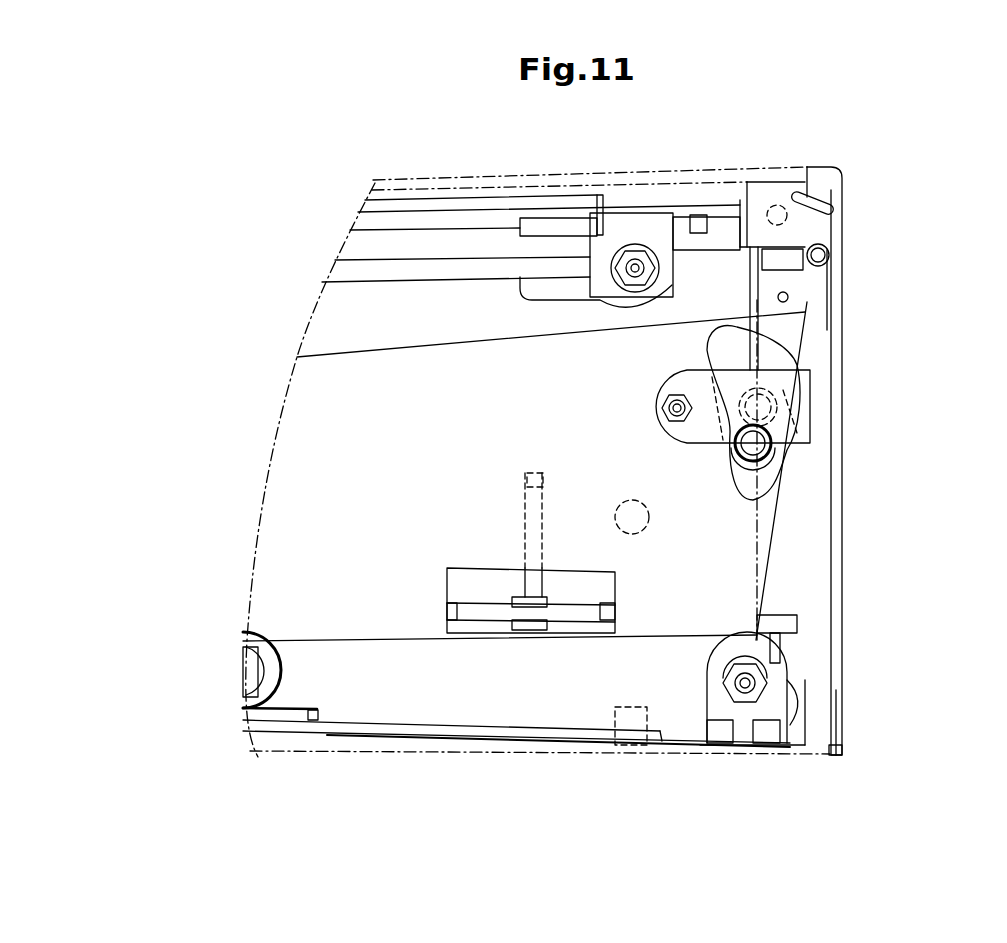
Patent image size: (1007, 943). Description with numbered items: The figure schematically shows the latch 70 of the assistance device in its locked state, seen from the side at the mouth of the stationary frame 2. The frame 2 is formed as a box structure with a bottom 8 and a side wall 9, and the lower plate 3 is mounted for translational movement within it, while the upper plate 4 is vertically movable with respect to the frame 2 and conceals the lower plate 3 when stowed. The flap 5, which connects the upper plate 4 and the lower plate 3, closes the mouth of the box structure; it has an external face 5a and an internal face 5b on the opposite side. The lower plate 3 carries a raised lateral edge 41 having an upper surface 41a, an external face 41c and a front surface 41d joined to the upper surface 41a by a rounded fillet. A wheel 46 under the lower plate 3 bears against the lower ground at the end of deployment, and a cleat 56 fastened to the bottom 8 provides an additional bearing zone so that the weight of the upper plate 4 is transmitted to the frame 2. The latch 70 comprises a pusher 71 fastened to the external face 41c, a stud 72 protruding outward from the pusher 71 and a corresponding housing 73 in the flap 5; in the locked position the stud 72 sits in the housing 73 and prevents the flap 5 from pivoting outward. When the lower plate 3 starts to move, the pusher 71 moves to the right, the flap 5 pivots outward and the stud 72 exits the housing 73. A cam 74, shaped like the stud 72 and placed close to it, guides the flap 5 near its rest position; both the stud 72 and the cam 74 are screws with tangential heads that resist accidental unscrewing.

The frame 2 is at (470, 748).
The lower plate 3 is at (332, 419).
The upper plate 4 is at (352, 249).
The flap 5 is at (856, 492).
The external face 5a is at (840, 717).
The internal face 5b is at (830, 700).
The bottom 8 is at (528, 740).
The side wall 9 is at (387, 751).
The raised lateral edge 41 is at (311, 560).
The upper surface 41a is at (357, 347).
The external face 41c is at (441, 493).
The front surface 41d is at (780, 530).
The wheel 46 is at (283, 683).
The cleat 56 is at (720, 710).
The latch 70 is at (817, 470).
The pusher 71 is at (780, 353).
The stud 72 is at (770, 415).
The housing 73 is at (773, 388).
The cam 74 is at (824, 447).